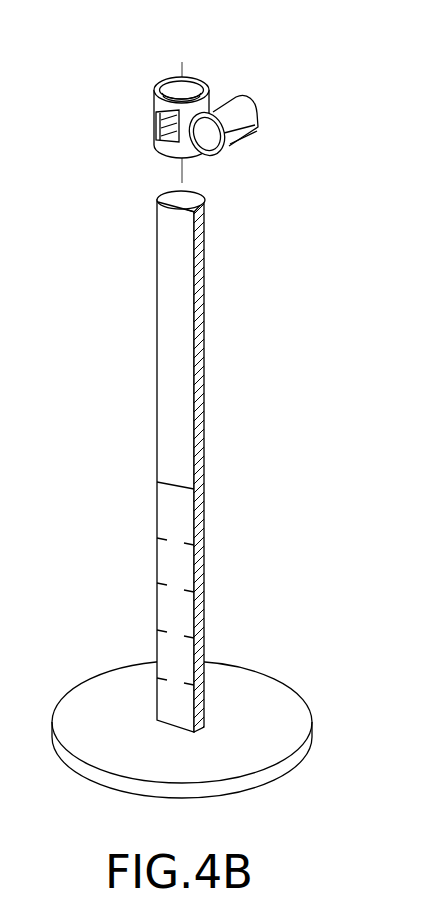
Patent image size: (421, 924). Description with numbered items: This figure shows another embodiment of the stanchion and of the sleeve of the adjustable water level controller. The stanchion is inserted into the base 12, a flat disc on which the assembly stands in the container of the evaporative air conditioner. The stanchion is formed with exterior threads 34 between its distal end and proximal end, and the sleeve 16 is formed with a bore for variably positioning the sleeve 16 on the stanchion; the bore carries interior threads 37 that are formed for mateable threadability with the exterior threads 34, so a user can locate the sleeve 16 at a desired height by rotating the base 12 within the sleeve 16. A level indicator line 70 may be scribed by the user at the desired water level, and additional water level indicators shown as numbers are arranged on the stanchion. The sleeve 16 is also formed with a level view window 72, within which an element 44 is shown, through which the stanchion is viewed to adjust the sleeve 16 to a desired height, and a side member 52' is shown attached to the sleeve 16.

The base 12 is at (255, 687).
The sleeve 16 is at (173, 93).
The exterior threads 34 is at (198, 375).
The interior threads 37 is at (168, 92).
The window opening 44 is at (162, 86).
The clip 52' is at (254, 126).
The level indicator line 70 is at (175, 482).
The level view window 72 is at (152, 123).